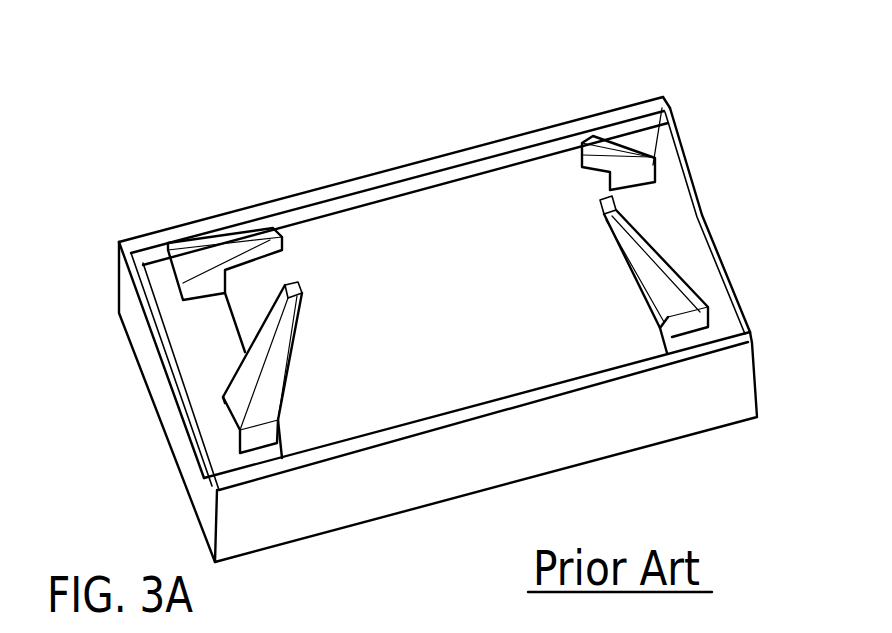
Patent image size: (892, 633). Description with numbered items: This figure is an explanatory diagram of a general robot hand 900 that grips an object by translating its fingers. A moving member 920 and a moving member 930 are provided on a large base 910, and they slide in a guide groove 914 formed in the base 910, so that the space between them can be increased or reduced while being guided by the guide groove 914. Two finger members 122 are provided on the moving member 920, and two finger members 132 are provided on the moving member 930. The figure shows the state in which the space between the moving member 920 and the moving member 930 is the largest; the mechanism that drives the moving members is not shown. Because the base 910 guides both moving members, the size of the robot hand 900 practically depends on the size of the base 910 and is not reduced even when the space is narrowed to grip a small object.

The robot hand 900 is at (187, 87).
The base 910 is at (477, 145).
The guide groove 914 is at (427, 265).
The moving member 920 is at (193, 358).
The moving member 930 is at (670, 212).
The finger member 122 is at (243, 212).
The finger member 132 is at (593, 125).